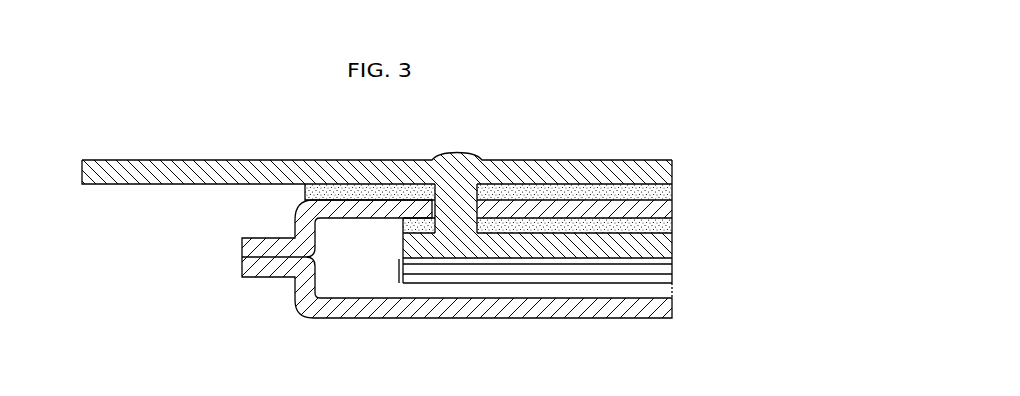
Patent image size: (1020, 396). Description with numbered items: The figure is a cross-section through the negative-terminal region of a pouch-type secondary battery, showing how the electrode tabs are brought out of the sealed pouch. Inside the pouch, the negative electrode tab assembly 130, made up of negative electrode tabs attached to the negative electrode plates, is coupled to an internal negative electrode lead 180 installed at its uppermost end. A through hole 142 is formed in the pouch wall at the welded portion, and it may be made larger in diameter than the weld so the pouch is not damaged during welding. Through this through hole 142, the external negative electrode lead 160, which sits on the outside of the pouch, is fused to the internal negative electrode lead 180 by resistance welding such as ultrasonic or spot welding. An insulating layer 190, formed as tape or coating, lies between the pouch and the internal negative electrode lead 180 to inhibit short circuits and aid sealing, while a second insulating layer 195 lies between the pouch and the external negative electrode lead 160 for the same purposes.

The negative electrode tab assembly 130 is at (400, 268).
The through hole 142 is at (472, 202).
The external negative electrode lead 160 is at (225, 160).
The internal negative electrode lead 180 is at (463, 248).
The insulating layer 190 is at (395, 218).
The insulating layer 195 is at (333, 195).